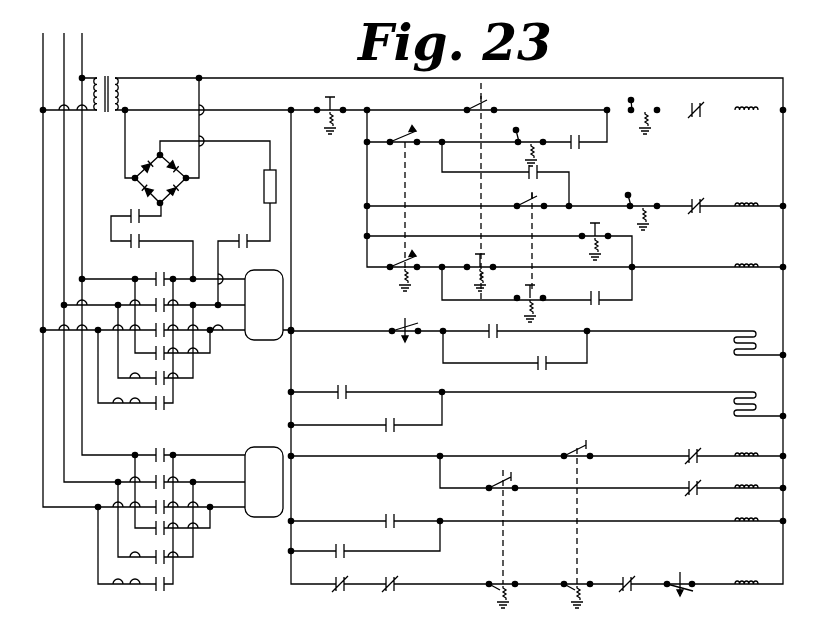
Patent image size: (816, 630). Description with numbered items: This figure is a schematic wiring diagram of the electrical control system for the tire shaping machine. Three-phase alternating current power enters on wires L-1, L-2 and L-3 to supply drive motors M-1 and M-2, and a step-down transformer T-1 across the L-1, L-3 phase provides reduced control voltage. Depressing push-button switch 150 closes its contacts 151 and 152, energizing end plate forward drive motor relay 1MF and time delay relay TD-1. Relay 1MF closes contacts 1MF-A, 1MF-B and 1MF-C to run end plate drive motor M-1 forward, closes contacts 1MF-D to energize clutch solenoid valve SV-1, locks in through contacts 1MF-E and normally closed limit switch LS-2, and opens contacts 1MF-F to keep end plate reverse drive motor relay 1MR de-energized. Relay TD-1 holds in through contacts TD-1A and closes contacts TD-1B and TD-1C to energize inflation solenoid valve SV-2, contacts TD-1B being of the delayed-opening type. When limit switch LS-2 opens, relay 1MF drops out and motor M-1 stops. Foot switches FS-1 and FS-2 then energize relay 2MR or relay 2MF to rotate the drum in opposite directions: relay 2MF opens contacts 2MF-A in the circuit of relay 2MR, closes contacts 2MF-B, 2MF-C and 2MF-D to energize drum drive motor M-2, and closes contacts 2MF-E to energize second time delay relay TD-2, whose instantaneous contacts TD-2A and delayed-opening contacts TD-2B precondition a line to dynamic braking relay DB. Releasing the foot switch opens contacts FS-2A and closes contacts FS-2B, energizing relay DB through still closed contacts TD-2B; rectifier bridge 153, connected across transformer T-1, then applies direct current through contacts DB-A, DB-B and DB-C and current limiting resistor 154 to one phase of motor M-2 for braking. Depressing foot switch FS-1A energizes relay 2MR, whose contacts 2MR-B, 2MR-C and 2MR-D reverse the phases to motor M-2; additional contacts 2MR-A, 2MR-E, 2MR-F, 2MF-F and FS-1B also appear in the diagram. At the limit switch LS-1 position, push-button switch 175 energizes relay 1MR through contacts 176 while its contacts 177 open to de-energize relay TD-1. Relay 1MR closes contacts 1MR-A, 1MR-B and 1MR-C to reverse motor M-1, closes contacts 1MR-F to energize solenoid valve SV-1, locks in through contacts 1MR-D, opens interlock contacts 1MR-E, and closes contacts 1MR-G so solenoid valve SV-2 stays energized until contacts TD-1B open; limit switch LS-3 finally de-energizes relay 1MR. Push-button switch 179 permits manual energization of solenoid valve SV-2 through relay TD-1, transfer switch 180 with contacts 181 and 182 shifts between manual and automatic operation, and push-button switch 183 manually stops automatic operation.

The push-button switch 150 is at (481, 83).
The contact 151 is at (470, 100).
The contact 152 is at (483, 257).
The rectifier bridge 153 is at (150, 163).
The current limiting resistor 154 is at (264, 178).
The push-button switch 175 is at (530, 192).
The contact 176 is at (515, 196).
The contact 177 is at (515, 292).
The push-button switch 179 is at (593, 226).
The transfer switch 180 is at (366, 142).
The contact 181 is at (392, 146).
The contact 182 is at (390, 270).
The push-button switch 183 is at (330, 97).
The wire L-1 is at (43, 60).
The wire L-2 is at (64, 36).
The wire L-3 is at (82, 45).
The step-down transformer T-1 is at (105, 75).
The end plate drive motor M-1 is at (264, 482).
The drum drive motor M-2 is at (264, 305).
The contact DB-A is at (135, 209).
The contact DB-B is at (140, 236).
The contact DB-C is at (250, 208).
The dynamic braking relay DB is at (740, 581).
The contact 2MF-B is at (155, 272).
The contact 2MF-C is at (152, 298).
The contact 2MF-D is at (152, 323).
The contact 2MF-E is at (393, 515).
The relay contact 2MF-F is at (340, 592).
The contact 2MF-A is at (692, 482).
The relay 2MF is at (753, 438).
The contact 2MR-B is at (170, 360).
The contact 2MR-C is at (170, 384).
The contact 2MR-D is at (170, 409).
The relay contact 2MR-E is at (343, 543).
The relay contact 2MR-F is at (393, 576).
The relay contact 2MR-A is at (690, 450).
The relay 2MR is at (745, 473).
The contact 1MF-A is at (152, 450).
The contact 1MF-B is at (152, 478).
The contact 1MF-C is at (152, 503).
The contact 1MF-D is at (345, 385).
The contact 1MF-E is at (577, 134).
The contact 1MF-F is at (698, 198).
The end plate forward drive motor relay 1MF is at (738, 108).
The contact 1MR-A is at (170, 534).
The contact 1MR-B is at (170, 561).
The contact 1MR-C is at (170, 588).
The contact 1MR-D is at (540, 170).
The contact 1MR-E is at (697, 103).
The contact 1MR-F is at (388, 418).
The contact 1MR-G is at (493, 325).
The end plate reverse drive motor relay 1MR is at (740, 203).
The limit switch LS-1 is at (631, 99).
The limit switch LS-2 is at (545, 106).
The limit switch LS-3 is at (629, 193).
The time delay relay TD-1 is at (738, 265).
The contact TD-1A is at (598, 296).
The contact TD-1B is at (403, 320).
The contact TD-1C is at (548, 358).
The second time delay relay TD-2 is at (755, 506).
The contact TD-2A is at (650, 561).
The contact TD-2B is at (685, 597).
The clutch solenoid valve SV-1 is at (745, 392).
The inflation solenoid valve SV-2 is at (745, 331).
The foot switch FS-1 is at (500, 480).
The foot switch contact FS-1A is at (515, 482).
The float switch contact FS-1B is at (495, 590).
The foot switch FS-2 is at (576, 450).
The contact FS-2A is at (587, 452).
The contact FS-2B is at (572, 580).